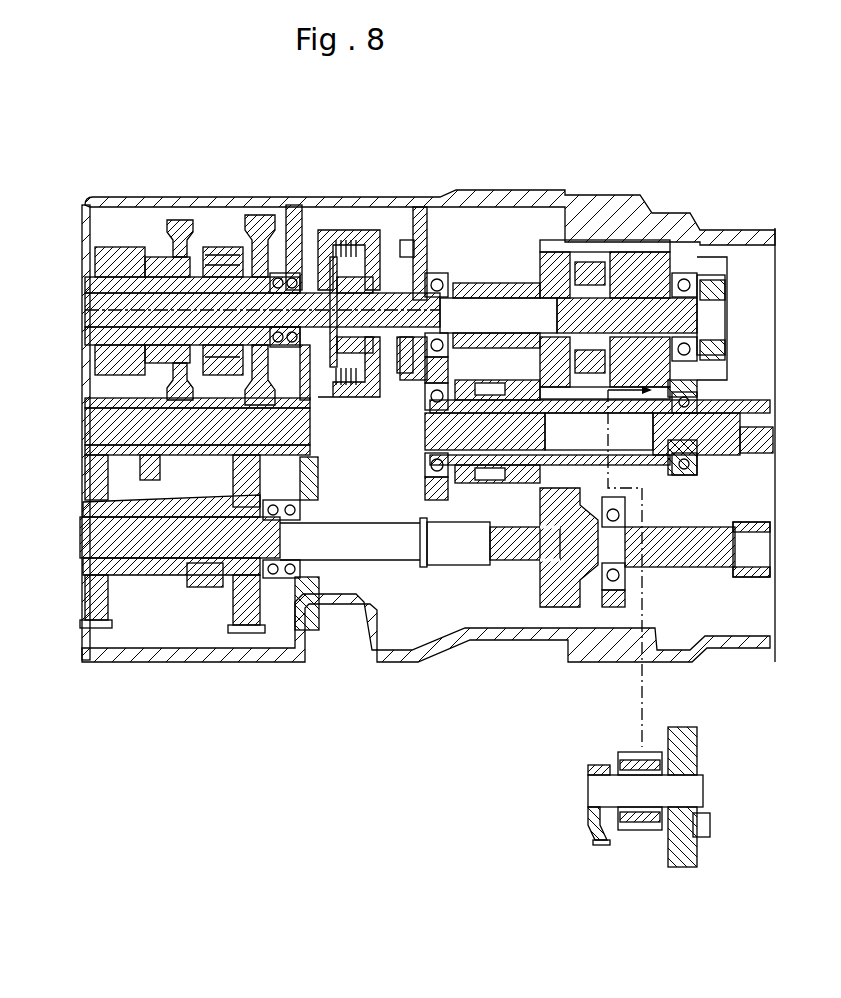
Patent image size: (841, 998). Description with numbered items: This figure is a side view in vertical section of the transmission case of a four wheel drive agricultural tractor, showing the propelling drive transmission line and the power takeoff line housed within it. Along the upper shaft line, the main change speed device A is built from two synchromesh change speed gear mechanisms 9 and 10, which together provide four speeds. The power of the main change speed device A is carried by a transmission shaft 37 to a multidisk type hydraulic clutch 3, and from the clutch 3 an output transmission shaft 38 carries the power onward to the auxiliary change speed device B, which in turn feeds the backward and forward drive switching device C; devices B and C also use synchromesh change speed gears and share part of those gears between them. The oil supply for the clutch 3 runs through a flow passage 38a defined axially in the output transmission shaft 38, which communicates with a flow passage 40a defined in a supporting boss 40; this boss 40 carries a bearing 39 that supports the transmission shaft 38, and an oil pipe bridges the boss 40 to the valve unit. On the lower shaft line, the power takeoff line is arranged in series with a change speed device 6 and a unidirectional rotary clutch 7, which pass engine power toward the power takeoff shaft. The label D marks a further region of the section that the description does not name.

The transmission shaft 37 is at (86, 310).
The synchromesh change speed gear mechanism 10 is at (120, 246).
The synchromesh change speed gear mechanism 9 is at (232, 250).
The multidisk type hydraulic clutch 3 is at (372, 220).
The supporting boss 40 is at (415, 240).
The flow passage 40a is at (406, 375).
The transmission shaft 38 is at (527, 300).
The flow passage 38a is at (448, 315).
The bearing 39 is at (450, 275).
The change speed device 6 is at (190, 583).
The unidirectional rotary clutch 7 is at (545, 590).
The main change speed device A is at (111, 222).
The auxiliary change speed device B is at (445, 505).
The backward and forward drive switching device C is at (658, 240).
The section D is at (400, 360).